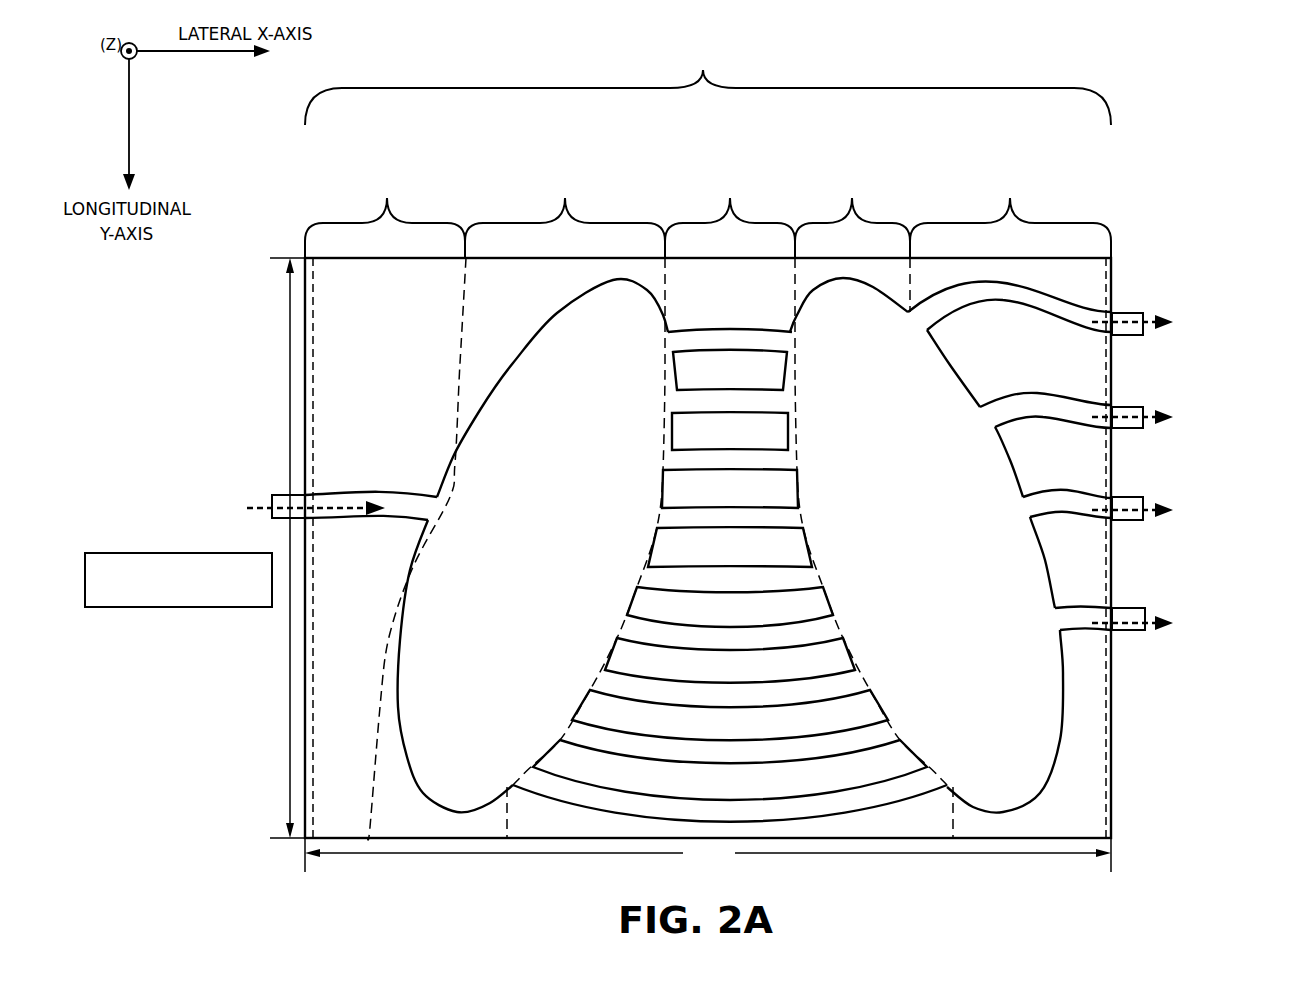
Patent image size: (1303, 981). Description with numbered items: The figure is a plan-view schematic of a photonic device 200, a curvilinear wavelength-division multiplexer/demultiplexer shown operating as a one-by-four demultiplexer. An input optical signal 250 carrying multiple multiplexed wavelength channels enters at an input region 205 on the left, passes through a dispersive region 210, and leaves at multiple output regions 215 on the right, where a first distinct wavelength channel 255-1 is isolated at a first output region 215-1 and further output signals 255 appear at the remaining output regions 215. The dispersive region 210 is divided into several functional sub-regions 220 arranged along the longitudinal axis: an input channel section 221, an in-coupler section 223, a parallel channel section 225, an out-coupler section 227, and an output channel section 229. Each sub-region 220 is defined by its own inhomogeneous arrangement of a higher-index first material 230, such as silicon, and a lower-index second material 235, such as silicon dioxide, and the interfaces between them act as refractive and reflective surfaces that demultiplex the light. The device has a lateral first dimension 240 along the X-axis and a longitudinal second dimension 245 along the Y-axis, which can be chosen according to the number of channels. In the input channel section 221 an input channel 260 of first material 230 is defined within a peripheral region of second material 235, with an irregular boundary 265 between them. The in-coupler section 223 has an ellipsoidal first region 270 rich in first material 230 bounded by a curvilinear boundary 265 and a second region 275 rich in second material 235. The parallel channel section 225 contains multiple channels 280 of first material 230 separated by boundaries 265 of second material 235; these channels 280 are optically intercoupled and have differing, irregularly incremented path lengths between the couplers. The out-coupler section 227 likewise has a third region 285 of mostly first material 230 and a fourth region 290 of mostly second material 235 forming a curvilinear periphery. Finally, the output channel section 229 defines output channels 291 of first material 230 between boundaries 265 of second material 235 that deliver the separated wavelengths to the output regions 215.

The photonic device 200 is at (1240, 68).
The input region 205 is at (280, 502).
The dispersive region 210 is at (1113, 813).
The output regions 215 is at (1118, 413).
The first output region 215-1 is at (1127, 320).
The sub-regions 220 is at (708, 441).
The input channel section 221 is at (385, 483).
The in-coupler section 223 is at (565, 197).
The parallel channel section 225 is at (730, 478).
The out-coupler section 227 is at (874, 188).
The output channel section 229 is at (1010, 215).
The first material 230 is at (685, 340).
The second material 235 is at (366, 294).
The first dimension 240 is at (725, 867).
The second dimension 245 is at (290, 733).
The input optical signal 250 is at (265, 510).
The output signals 255 is at (1140, 413).
The first distinct wavelength channel 255-1 is at (1140, 317).
The input channel 260 is at (403, 502).
The boundary 265 is at (518, 357).
The first region 270 is at (536, 531).
The second region 275 is at (536, 294).
The channels 280 is at (748, 411).
The third region 285 is at (928, 531).
The fourth region 290 is at (905, 280).
The output channels 291 is at (1030, 300).